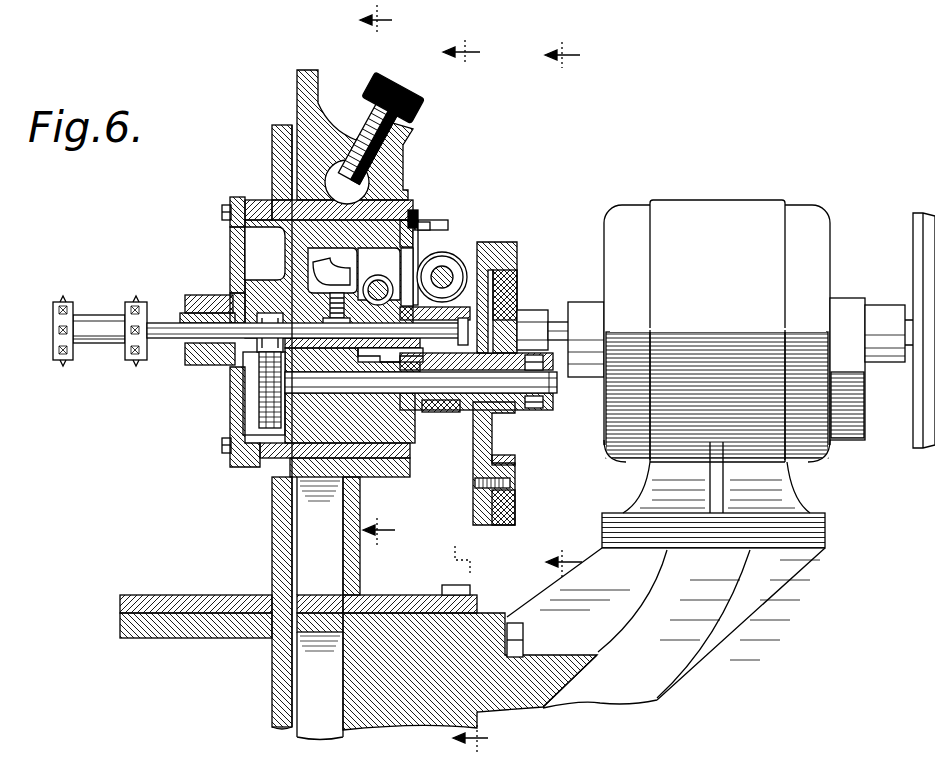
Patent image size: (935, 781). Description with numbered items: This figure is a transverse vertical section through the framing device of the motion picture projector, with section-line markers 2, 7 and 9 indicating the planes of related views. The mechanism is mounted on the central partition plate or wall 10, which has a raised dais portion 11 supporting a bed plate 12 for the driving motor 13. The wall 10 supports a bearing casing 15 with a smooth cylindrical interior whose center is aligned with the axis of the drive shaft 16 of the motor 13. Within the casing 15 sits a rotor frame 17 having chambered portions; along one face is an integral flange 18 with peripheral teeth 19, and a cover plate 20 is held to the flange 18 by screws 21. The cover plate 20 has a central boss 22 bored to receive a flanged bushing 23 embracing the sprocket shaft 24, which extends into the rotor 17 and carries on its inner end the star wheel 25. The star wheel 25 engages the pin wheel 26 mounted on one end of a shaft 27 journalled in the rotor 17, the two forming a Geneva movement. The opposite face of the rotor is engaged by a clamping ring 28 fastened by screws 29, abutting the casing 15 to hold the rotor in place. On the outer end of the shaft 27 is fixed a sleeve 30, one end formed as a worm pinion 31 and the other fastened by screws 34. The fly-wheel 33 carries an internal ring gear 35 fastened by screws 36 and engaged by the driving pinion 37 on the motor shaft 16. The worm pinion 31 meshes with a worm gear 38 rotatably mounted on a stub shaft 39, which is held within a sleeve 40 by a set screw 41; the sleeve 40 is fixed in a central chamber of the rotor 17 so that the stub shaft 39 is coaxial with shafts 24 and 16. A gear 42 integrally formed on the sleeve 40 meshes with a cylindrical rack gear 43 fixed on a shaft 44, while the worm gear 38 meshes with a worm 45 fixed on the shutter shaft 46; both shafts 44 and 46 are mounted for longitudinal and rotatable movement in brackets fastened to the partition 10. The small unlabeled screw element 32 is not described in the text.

The section line 2 is at (454, 396).
The section line 7 is at (518, 309).
The section line 9 is at (366, 281).
The central partition plate 10 is at (272, 517).
The raised dais portion 11 is at (603, 540).
The bed plate 12 is at (603, 515).
The driving motor 13 is at (609, 282).
The bearing casing 15 is at (383, 207).
The drive shaft 16 is at (553, 328).
The rotor frame 17 is at (277, 222).
The integral flange 18 is at (230, 226).
The peripheral teeth 19 is at (253, 465).
The cover plate 20 is at (228, 247).
The screws 21 is at (222, 210).
The central boss 22 is at (185, 345).
The flanged bushing 23 is at (213, 360).
The sprocket shaft 24 is at (165, 322).
The star wheel 25 is at (238, 296).
The pin wheel 26 is at (275, 388).
The shaft 27 is at (557, 388).
The clamping ring 28 is at (415, 210).
The screws 29 is at (430, 225).
The sleeve 30 is at (478, 410).
The worm pinion 31 is at (415, 425).
The bracket screw 32 is at (513, 420).
The fly-wheel 33 is at (515, 517).
The screws 34 is at (535, 412).
The internal ring gear 35 is at (510, 466).
The screws 36 is at (520, 486).
The driving pinion 37 is at (520, 305).
The worm gear 38 is at (510, 270).
The stub shaft 39 is at (265, 253).
The sleeve 40 is at (262, 352).
The set screw 41 is at (332, 269).
The gear 42 is at (444, 258).
The cylindrical rack gear 43 is at (379, 276).
The shaft 44 is at (333, 295).
The worm 45 is at (513, 248).
The shutter shaft 46 is at (398, 300).